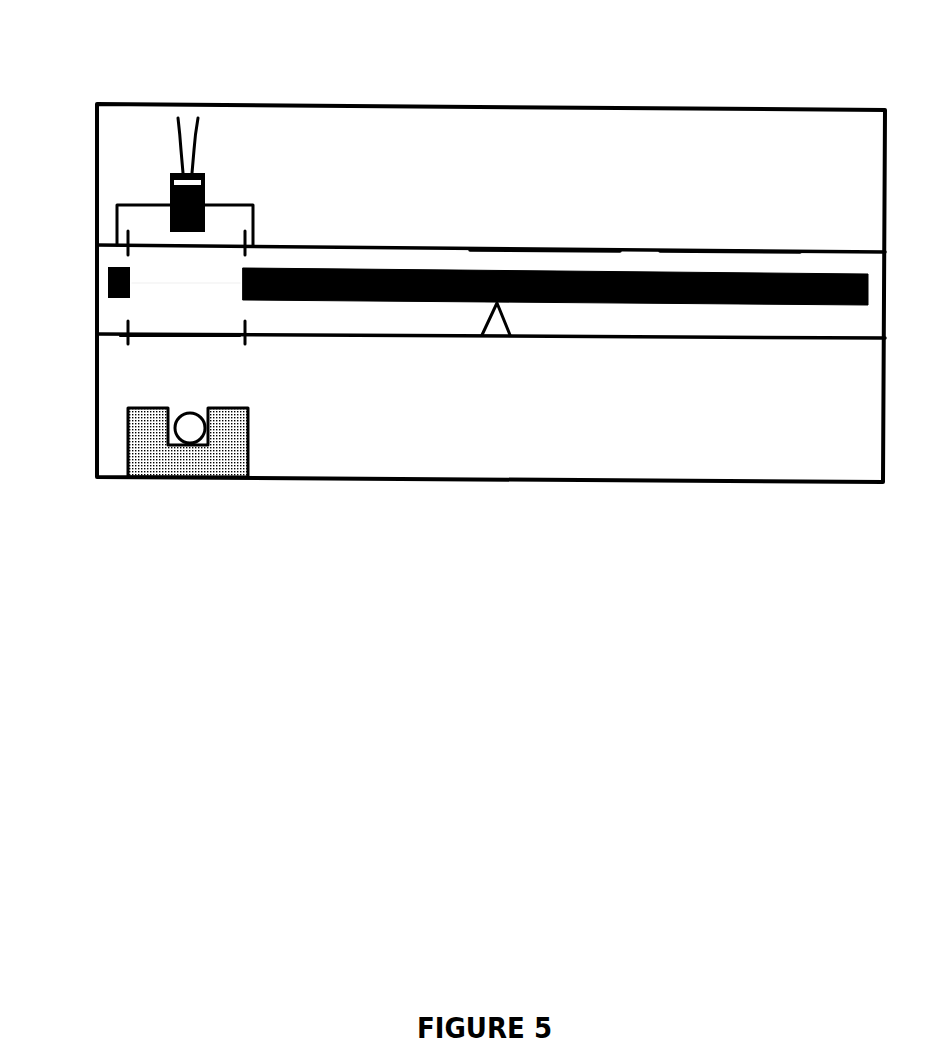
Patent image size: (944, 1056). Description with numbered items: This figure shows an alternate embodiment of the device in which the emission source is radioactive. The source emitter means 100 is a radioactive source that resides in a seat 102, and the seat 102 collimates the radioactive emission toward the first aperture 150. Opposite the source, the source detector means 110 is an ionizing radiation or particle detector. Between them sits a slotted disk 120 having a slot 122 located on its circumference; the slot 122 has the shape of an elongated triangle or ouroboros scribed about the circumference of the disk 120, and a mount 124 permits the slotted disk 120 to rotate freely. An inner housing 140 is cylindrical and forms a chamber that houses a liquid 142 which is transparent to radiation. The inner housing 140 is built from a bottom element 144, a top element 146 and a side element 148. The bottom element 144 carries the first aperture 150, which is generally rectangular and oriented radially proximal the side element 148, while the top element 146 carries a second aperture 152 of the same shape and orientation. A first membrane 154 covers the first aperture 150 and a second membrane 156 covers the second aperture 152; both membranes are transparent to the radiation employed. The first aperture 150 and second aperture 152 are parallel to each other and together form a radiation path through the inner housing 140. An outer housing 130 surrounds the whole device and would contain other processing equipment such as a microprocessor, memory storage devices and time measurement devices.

The source emitter means 100 is at (193, 430).
The seat 102 is at (152, 463).
The source detector means 110 is at (205, 175).
The slotted disk 120 is at (765, 305).
The slot 122 is at (158, 287).
The mount 124 is at (495, 327).
The outer housing 130 is at (415, 478).
The inner housing 140 is at (450, 247).
The liquid 142 is at (723, 263).
The bottom element 144 is at (658, 338).
The top element 146 is at (542, 247).
The side element 148 is at (93, 285).
The first aperture 150 is at (245, 340).
The second aperture 152 is at (248, 238).
The first membrane 154 is at (167, 335).
The second membrane 156 is at (158, 245).